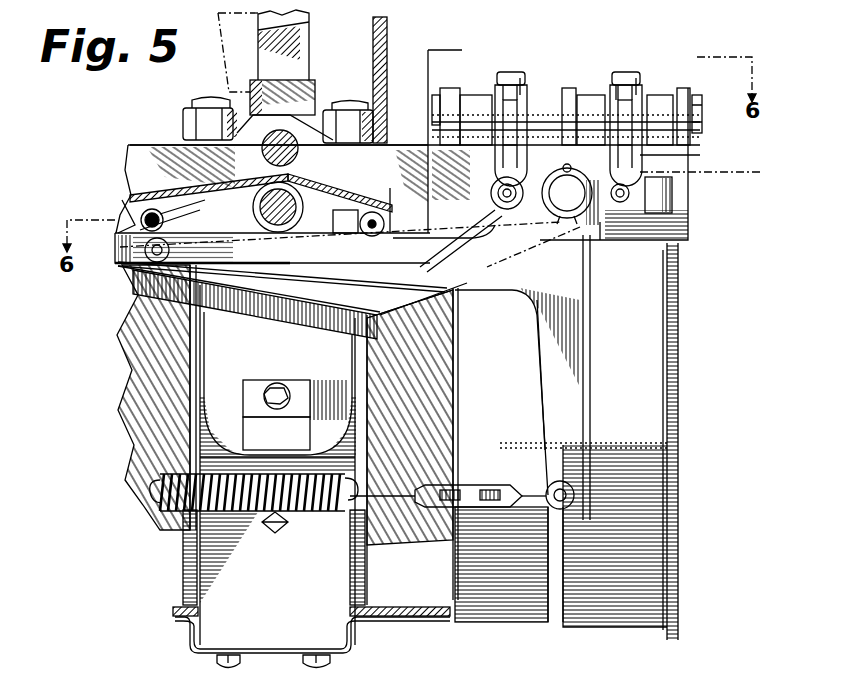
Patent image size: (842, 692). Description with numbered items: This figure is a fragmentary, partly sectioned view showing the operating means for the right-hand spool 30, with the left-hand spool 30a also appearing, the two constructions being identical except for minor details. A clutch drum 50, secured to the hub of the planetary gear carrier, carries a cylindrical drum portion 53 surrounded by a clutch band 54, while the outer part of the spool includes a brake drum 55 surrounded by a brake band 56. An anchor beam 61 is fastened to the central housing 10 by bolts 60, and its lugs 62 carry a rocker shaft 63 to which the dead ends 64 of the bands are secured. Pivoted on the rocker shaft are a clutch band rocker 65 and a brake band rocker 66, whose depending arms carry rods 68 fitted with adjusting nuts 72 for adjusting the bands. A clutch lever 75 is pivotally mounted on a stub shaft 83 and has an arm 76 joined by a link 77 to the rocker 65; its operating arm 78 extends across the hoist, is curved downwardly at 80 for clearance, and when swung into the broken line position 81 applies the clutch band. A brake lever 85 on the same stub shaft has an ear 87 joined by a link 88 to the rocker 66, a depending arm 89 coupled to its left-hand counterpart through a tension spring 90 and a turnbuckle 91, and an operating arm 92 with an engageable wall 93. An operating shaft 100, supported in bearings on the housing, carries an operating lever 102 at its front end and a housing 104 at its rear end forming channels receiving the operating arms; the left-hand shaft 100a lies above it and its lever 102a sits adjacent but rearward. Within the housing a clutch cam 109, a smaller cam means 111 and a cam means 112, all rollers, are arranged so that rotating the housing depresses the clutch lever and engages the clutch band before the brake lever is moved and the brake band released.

The central housing 10 is at (237, 364).
The spool 30 is at (366, 548).
The spool 30a is at (183, 545).
The clutch drum 50 is at (675, 434).
The cylindrical drum portion 53 is at (668, 357).
The clutch band 54 is at (648, 322).
The brake drum 55 is at (555, 612).
The brake band 56 is at (500, 592).
The bolts 60 is at (210, 101).
The anchor beam 61 is at (148, 138).
The lugs 62 is at (450, 88).
The rocker shaft 63 is at (702, 118).
The dead ends 64 is at (475, 97).
The clutch band rocker 65 is at (622, 86).
The brake band rocker 66 is at (505, 96).
The rods 68 is at (507, 72).
The adjusting nuts 72 is at (515, 76).
The clutch lever 75 is at (451, 293).
The arm 76 is at (675, 193).
The link 77 is at (700, 156).
The operating arm 78 is at (320, 300).
The downward curve 80 is at (398, 306).
The broken line position 81 is at (258, 312).
The stub shaft 83 is at (548, 212).
The brake lever 85 is at (532, 312).
The ear 87 is at (497, 205).
The link 88 is at (496, 170).
The depending arm 89 is at (573, 423).
The tension spring 90 is at (315, 514).
The turnbuckle 91 is at (505, 484).
The operating arm 92 is at (298, 245).
The engageable wall 93 is at (228, 205).
The operating shaft 100 is at (292, 190).
The operating shaft 100a is at (265, 153).
The operating lever 102 is at (300, 28).
The operating lever 102a is at (300, 50).
The housing 104 is at (358, 195).
The clutch cam 109 is at (124, 198).
The cam means 111 is at (142, 216).
The cam means 112 is at (384, 219).